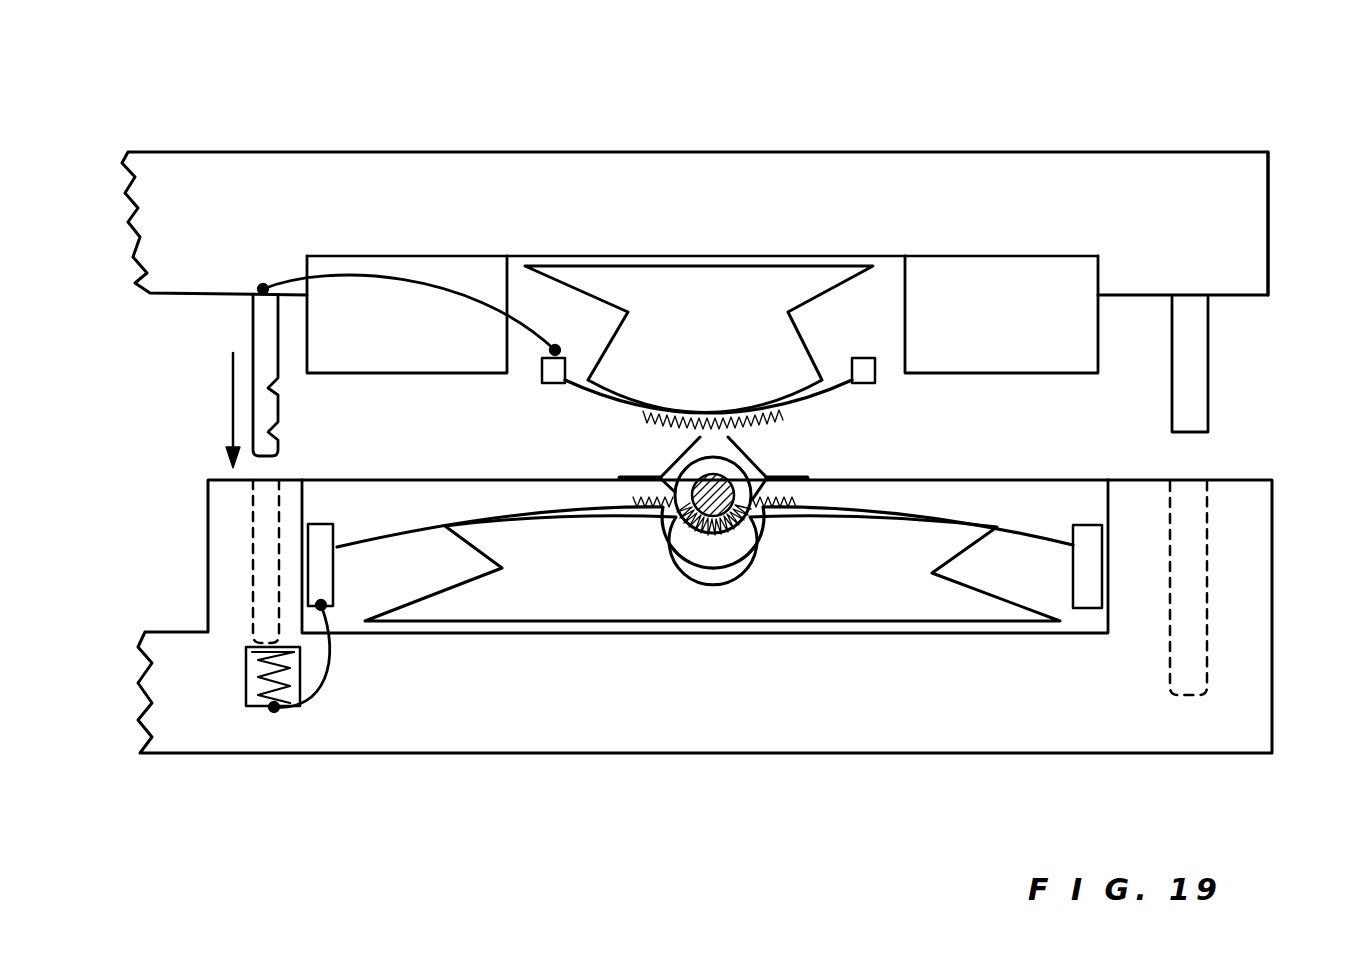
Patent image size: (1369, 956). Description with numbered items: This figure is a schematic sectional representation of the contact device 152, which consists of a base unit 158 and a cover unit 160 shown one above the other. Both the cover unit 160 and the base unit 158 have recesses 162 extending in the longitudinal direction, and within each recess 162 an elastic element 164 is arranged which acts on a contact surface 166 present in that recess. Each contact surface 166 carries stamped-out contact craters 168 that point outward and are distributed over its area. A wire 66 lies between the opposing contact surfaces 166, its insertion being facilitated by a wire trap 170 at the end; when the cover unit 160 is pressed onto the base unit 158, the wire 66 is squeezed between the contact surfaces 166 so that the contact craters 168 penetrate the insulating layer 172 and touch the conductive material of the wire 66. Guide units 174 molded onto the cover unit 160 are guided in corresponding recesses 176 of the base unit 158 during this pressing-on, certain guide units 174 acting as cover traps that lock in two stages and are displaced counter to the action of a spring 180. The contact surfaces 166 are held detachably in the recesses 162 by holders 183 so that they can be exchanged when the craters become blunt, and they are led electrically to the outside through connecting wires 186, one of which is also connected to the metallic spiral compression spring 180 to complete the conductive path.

The contact device 152 is at (1183, 142).
The cover unit 160 is at (828, 163).
The recess 162 is at (878, 295).
The elastic element 164 is at (672, 295).
The contact surface 166 is at (813, 400).
The contact crater 168 is at (770, 422).
The wire trap 170 is at (755, 462).
The insulating layer 172 is at (700, 467).
The wire 66 is at (698, 485).
The guide unit 174 is at (253, 330).
The recess 176 is at (266, 567).
The spring 180 is at (253, 673).
The clamp 183 is at (540, 372).
The connecting wire 186 is at (356, 273).
The base unit 158 is at (847, 725).